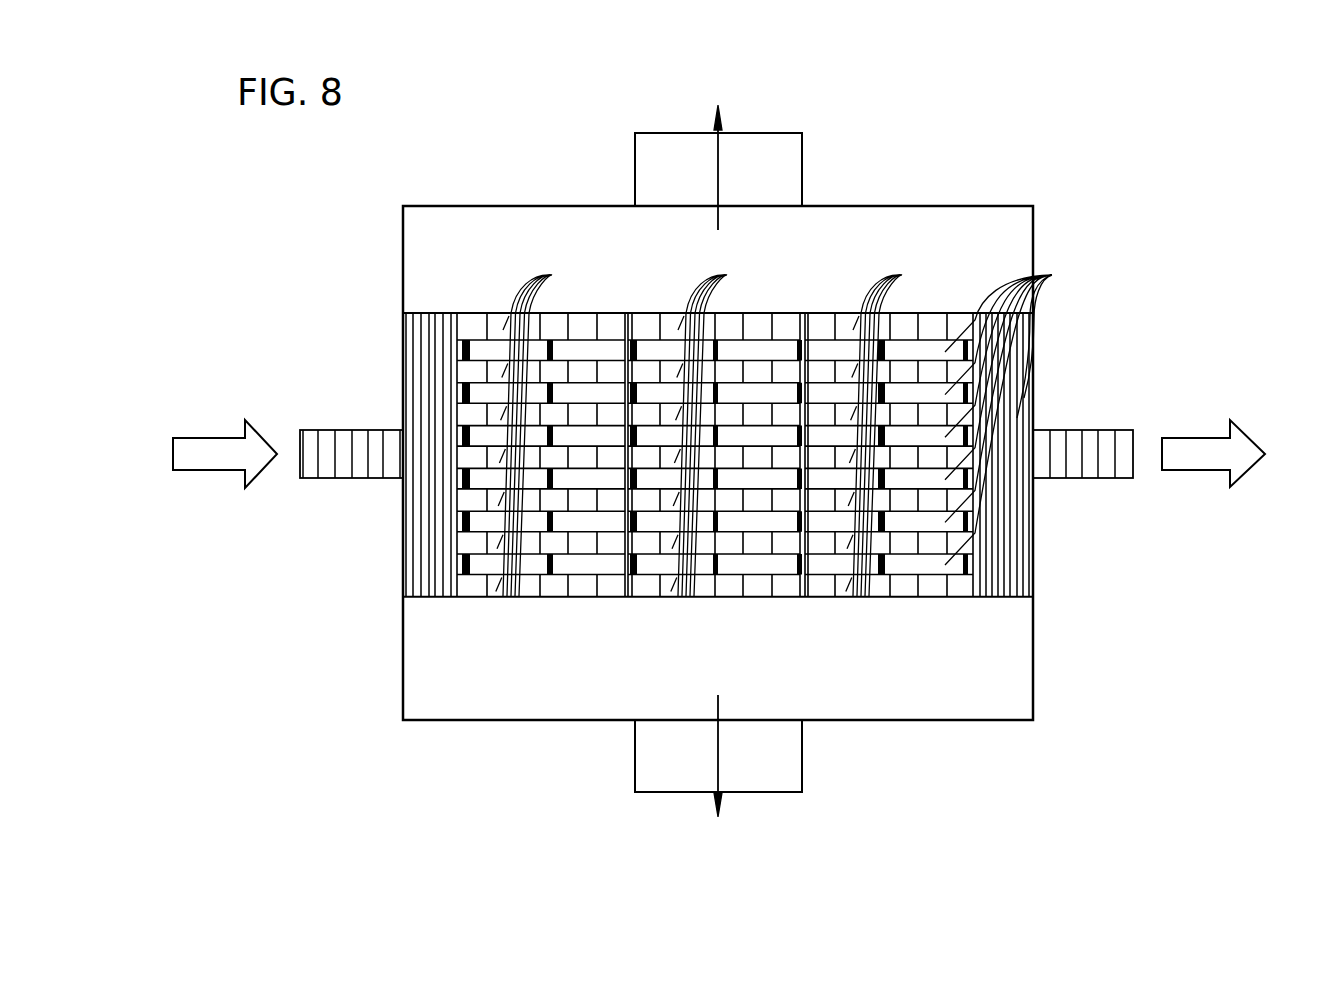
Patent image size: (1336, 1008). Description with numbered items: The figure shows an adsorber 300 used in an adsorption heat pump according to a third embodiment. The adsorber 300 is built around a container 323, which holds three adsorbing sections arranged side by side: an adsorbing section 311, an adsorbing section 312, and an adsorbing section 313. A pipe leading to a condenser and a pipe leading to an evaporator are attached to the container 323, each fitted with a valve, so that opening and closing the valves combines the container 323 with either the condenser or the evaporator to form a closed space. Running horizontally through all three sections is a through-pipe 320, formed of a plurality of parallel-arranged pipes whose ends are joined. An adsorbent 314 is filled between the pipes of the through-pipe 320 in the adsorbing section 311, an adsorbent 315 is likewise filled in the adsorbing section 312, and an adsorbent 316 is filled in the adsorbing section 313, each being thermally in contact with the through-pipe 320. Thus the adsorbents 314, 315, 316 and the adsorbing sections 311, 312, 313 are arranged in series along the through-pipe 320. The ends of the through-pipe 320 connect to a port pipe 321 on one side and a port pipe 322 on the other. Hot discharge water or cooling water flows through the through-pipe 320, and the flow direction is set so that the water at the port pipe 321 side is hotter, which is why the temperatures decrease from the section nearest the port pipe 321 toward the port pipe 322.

The adsorber 300 is at (475, 133).
The adsorbing section 311 is at (455, 600).
The adsorbing section 312 is at (632, 600).
The adsorbing section 313 is at (807, 600).
The adsorbent 314 is at (542, 429).
The adsorbent 315 is at (717, 429).
The adsorbent 316 is at (892, 429).
The through-pipe 320 is at (1020, 414).
The port pipe 321 is at (377, 440).
The port pipe 322 is at (1063, 438).
The container 323 is at (1003, 218).